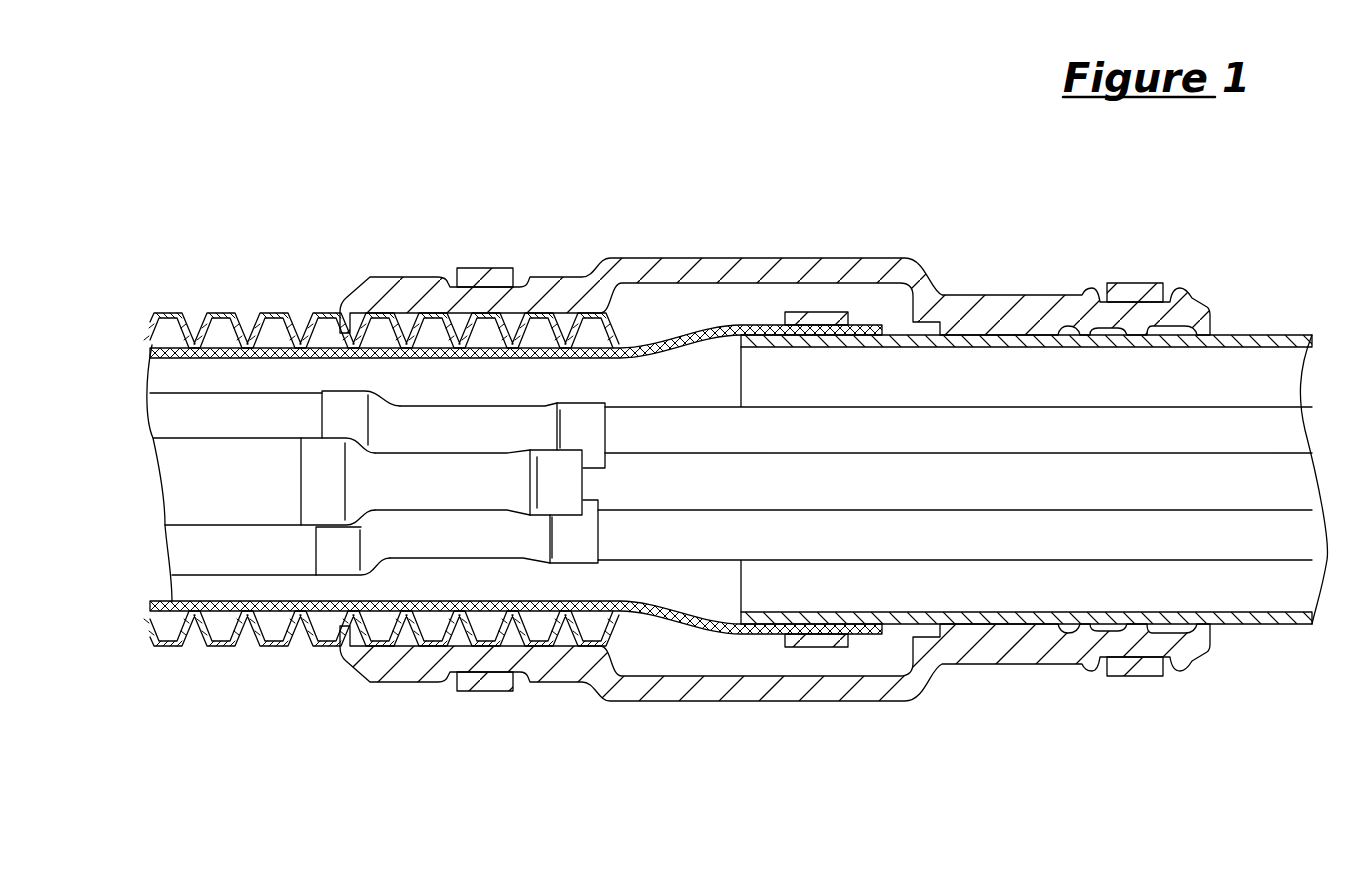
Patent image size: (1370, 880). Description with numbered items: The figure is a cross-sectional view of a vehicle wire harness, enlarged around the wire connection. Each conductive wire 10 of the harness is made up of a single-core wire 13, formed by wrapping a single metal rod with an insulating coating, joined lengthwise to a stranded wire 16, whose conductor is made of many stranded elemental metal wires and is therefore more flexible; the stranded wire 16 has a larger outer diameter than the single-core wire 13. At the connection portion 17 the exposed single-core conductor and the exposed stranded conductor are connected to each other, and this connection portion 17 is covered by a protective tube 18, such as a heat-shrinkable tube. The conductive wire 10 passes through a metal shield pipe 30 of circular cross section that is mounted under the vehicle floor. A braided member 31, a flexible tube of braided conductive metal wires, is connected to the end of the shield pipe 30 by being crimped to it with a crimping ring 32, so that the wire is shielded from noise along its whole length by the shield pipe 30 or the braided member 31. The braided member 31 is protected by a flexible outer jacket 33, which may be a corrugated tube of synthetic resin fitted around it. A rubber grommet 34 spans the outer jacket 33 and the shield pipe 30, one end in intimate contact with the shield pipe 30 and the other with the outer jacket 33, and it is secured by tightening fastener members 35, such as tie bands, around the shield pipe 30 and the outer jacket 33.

The conductive wire 10 is at (1033, 388).
The single-core wire 13 is at (937, 432).
The stranded wire 16 is at (248, 425).
The connection portion 17 is at (437, 387).
The protective tube 18 is at (495, 432).
The shield pipe 30 is at (1257, 342).
The braided member 31 is at (195, 350).
The crimping ring 32 is at (817, 312).
The outer jacket 33 is at (270, 647).
The grommet 34 is at (752, 701).
The fastener member 35 is at (480, 691).